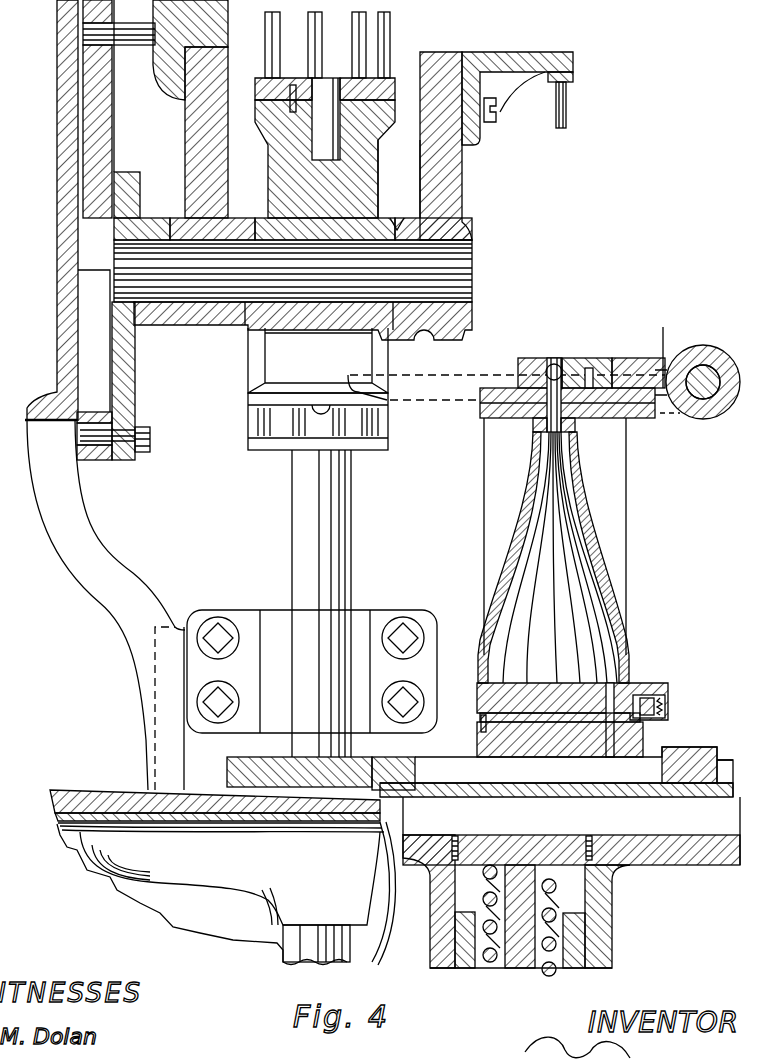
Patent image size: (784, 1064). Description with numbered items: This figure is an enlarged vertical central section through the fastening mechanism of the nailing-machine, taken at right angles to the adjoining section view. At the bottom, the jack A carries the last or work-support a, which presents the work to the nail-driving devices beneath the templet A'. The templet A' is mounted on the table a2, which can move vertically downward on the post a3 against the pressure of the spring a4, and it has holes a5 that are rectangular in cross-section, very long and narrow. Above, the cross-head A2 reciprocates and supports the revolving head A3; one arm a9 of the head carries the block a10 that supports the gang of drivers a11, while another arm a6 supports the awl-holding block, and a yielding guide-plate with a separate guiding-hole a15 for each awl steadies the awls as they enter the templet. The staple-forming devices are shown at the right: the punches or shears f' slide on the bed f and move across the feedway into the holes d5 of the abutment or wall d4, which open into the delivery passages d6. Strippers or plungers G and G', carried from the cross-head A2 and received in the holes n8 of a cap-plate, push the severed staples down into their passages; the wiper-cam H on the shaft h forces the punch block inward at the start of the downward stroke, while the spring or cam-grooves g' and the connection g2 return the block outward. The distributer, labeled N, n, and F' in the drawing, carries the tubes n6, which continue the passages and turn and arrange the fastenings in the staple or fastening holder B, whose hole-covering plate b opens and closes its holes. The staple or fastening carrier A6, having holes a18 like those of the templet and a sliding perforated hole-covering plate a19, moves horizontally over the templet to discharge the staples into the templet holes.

The drivers a11 is at (358, 43).
The driver block a10 is at (386, 91).
The arm of the revolving head a9 is at (274, 168).
The revolving head A3 is at (381, 208).
The cross-head A2 is at (459, 193).
The strippers or plungers G is at (518, 100).
The strippers G' is at (576, 105).
The arm of the revolving head a6 is at (318, 360).
The guiding-hole a15 is at (375, 462).
The templet holes a5 is at (342, 606).
The templet A' is at (302, 771).
The holes or openings in the abutment d5 is at (540, 359).
The plate F' is at (638, 362).
The punches or shears f' is at (587, 361).
The abutment or wall d4 is at (518, 368).
The holes of the cap-plate n8 is at (568, 356).
The pipe n is at (600, 363).
The connection g2 is at (664, 347).
The wiper-cam H is at (703, 368).
The spring or cam-grooves g' is at (707, 354).
The shaft h is at (700, 395).
The bed f is at (650, 416).
The delivery passages or holes d6 is at (533, 428).
The bellows N is at (574, 426).
The tubes n6 is at (597, 640).
The staple or fastening holder B is at (609, 700).
The hole-covering plate b is at (668, 717).
The carrier holes a18 is at (644, 738).
The staple or fastening carrier A6 is at (437, 747).
The sliding perforated hole-covering plate a19 is at (500, 758).
The table a2 is at (648, 857).
The spring a4 is at (490, 965).
The post a3 is at (575, 967).
The last or work-support a is at (226, 893).
The jack A is at (291, 954).